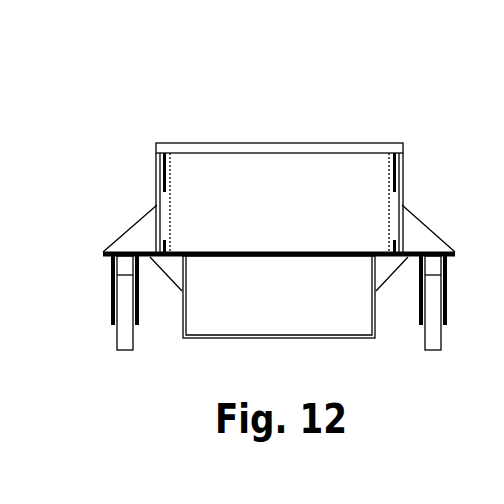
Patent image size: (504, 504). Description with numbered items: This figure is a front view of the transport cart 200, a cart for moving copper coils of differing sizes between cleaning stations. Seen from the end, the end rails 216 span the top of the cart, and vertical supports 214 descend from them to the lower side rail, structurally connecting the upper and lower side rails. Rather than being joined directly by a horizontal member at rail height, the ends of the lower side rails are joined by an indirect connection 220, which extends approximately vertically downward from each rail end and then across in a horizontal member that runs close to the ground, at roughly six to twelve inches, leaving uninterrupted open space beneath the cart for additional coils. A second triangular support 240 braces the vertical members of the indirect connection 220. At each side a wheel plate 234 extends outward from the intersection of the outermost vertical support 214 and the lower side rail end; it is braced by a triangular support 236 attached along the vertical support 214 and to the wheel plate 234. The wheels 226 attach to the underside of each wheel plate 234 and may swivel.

The transport cart 200 is at (265, 92).
The end rails 216 is at (293, 148).
The vertical supports 214 is at (163, 199).
The triangular support 236 is at (152, 241).
The wheel plate 234 is at (106, 261).
The wheels 226 is at (125, 328).
The second triangular support 240 is at (177, 262).
The indirect connection 220 is at (187, 312).